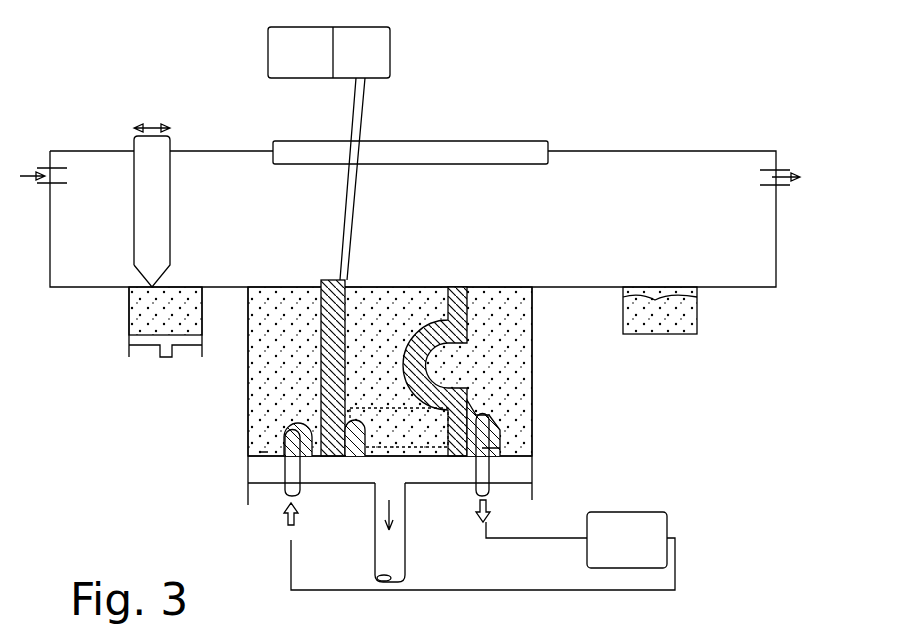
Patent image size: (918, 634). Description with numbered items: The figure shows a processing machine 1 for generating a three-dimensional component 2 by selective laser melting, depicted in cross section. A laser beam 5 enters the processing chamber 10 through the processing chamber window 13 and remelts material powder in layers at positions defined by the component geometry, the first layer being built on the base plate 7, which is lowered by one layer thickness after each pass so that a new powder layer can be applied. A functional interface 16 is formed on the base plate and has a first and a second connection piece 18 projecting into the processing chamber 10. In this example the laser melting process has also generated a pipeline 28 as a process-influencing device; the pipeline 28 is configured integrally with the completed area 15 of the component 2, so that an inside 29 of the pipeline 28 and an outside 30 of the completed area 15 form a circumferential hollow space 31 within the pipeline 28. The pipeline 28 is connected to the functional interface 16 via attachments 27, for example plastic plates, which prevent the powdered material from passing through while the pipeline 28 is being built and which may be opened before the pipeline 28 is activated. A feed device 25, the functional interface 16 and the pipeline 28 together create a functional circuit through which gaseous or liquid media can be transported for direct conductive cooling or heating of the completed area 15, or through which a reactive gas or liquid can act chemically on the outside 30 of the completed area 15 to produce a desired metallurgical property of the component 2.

The processing machine 1 is at (116, 80).
The three-dimensional component 2 is at (460, 284).
The laser beam 5 is at (358, 100).
The base plate 7 is at (277, 472).
The processing chamber 10 is at (672, 195).
The processing chamber window 13 is at (508, 152).
The completed area of the component 15 is at (362, 447).
The functional interface 16 is at (283, 470).
The connection piece 18 is at (265, 448).
The feed device 25 is at (658, 525).
The attachments 27 is at (280, 446).
The pipeline 28 is at (297, 440).
The inside of the pipeline 29 is at (326, 458).
The outside of the completed area 30 is at (315, 415).
The circumferential hollow space 31 is at (486, 420).